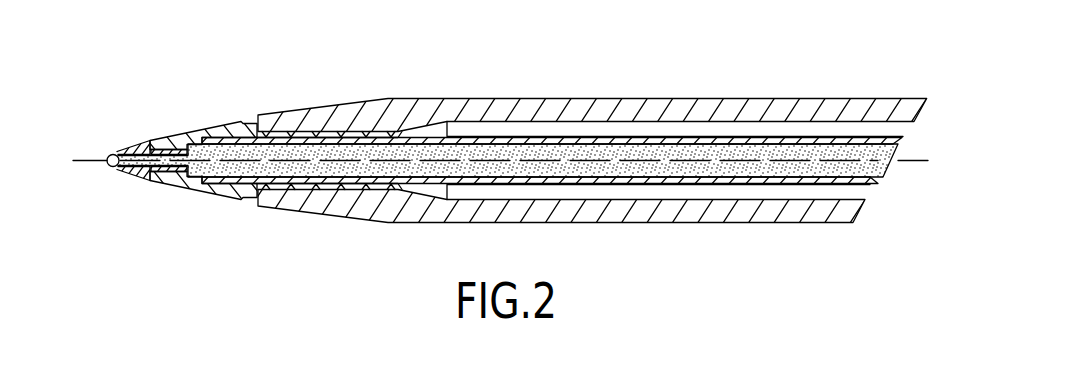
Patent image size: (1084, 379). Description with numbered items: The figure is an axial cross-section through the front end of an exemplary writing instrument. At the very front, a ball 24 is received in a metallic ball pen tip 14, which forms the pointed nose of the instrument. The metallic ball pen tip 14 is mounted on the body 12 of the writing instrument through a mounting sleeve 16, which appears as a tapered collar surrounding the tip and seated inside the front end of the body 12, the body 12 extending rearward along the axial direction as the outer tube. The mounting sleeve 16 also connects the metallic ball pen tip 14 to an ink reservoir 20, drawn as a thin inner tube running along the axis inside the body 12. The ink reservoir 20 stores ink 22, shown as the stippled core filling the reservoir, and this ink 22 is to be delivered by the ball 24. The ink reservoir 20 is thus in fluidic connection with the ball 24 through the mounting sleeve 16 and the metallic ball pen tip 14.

The body 12 is at (618, 111).
The metallic ball pen tip 14 is at (137, 147).
The mounting sleeve 16 is at (217, 127).
The ink reservoir 20 is at (482, 137).
The ink 22 is at (727, 150).
The ball 24 is at (108, 167).